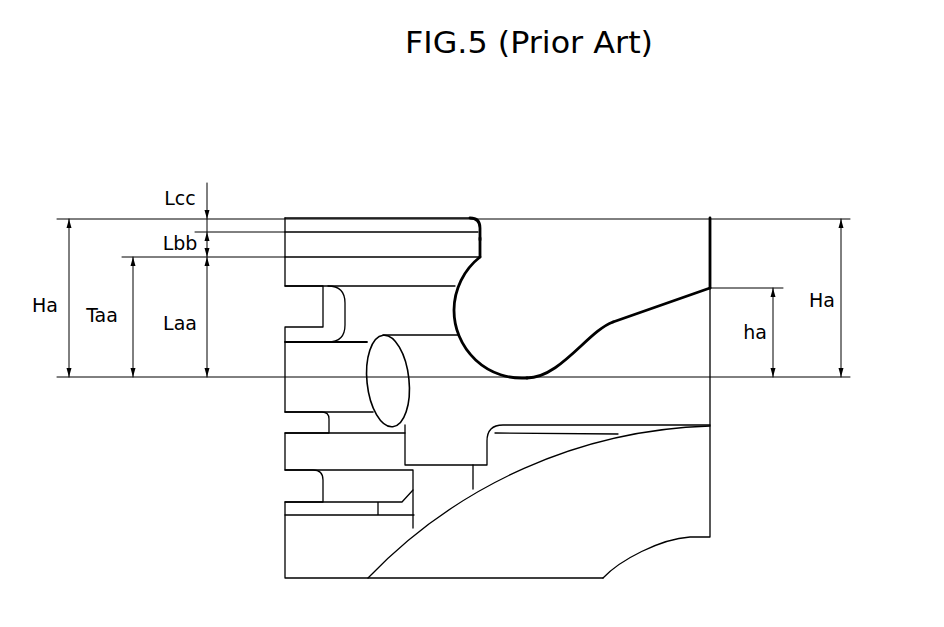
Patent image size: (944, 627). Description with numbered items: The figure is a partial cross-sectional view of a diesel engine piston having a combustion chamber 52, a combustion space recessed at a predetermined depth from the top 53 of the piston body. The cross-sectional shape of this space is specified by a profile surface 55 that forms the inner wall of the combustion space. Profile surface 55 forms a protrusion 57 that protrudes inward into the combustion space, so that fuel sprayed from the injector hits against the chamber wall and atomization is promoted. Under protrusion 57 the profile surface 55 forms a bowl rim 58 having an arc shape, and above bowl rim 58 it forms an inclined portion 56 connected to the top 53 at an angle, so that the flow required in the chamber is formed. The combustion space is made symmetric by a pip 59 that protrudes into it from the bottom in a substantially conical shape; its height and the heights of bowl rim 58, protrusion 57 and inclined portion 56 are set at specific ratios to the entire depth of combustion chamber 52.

The combustion chamber 52 is at (611, 289).
The top 53 is at (432, 218).
The profile surface 55 is at (525, 150).
The inclined portion 56 is at (483, 218).
The protrusion 57 is at (480, 245).
The bowl rim 58 is at (454, 310).
The pip 59 is at (662, 305).